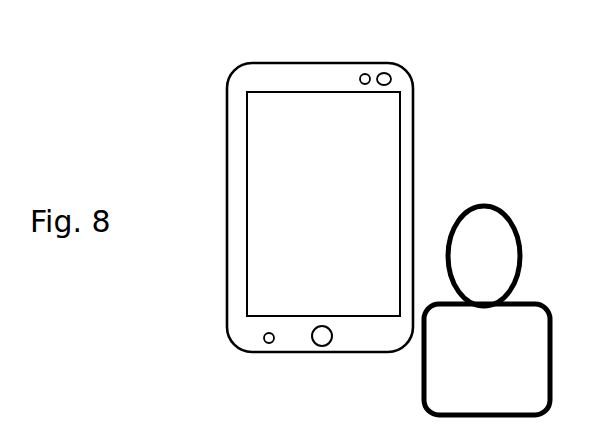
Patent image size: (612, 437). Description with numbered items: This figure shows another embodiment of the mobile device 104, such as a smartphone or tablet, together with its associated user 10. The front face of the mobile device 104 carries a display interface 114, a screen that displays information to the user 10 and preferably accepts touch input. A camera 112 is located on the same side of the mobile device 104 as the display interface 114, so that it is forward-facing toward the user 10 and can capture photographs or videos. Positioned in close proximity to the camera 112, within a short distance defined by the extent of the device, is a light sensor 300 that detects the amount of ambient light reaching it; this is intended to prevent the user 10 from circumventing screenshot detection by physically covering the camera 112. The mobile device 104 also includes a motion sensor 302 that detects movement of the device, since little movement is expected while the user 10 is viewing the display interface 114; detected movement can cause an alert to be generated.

The user 10 is at (507, 248).
The mobile device 104 is at (213, 163).
The camera 112 is at (393, 73).
The display interface 114 is at (333, 208).
The light sensor 300 is at (365, 73).
The motion sensor 302 is at (263, 338).